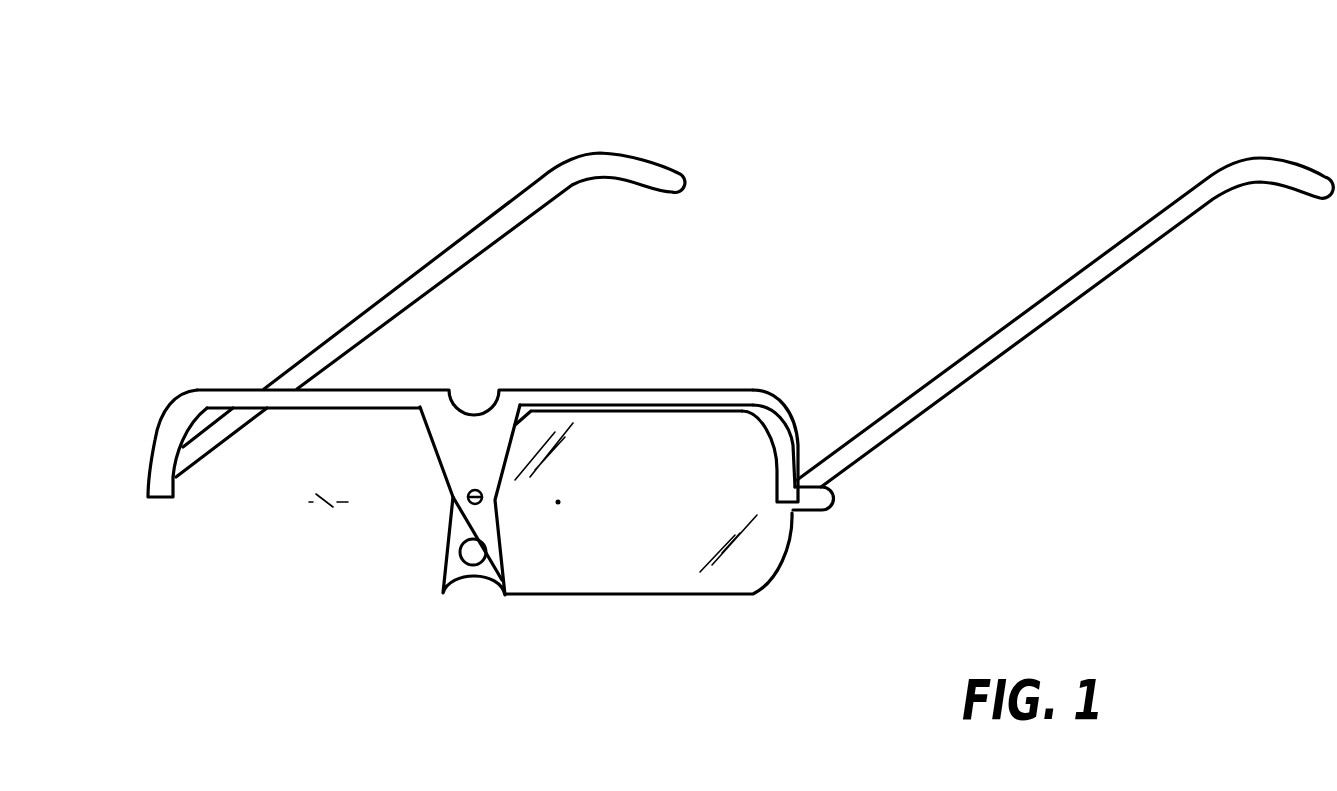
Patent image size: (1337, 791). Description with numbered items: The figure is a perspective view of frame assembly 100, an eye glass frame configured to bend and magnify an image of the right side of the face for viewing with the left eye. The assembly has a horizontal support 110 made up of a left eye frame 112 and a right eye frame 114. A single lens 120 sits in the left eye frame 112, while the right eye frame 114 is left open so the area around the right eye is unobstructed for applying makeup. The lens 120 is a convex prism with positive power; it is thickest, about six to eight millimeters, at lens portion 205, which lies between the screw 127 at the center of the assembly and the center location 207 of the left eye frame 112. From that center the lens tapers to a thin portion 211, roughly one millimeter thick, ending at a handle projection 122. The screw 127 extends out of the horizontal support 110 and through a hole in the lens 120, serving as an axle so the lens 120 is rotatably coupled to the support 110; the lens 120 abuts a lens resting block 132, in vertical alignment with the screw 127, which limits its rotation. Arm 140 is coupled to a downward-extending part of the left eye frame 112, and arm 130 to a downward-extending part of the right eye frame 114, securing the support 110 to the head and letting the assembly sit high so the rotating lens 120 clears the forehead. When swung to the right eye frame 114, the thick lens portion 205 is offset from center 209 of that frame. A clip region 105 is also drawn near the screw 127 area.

The frame assembly 100 is at (279, 108).
The horizontal support 110 is at (406, 384).
The left eye frame 112 is at (786, 414).
The right eye frame 114 is at (177, 400).
The lens 120 is at (712, 595).
The handle projection 122 is at (838, 500).
The screw 127 is at (465, 496).
The arm 130 is at (443, 236).
The lens resting block 132 is at (460, 554).
The arm 140 is at (1093, 238).
The clip 105 is at (466, 588).
The lens portion 205 is at (558, 502).
The center location 207 is at (625, 502).
The center 209 is at (323, 500).
The tapered thin portion 211 is at (712, 502).